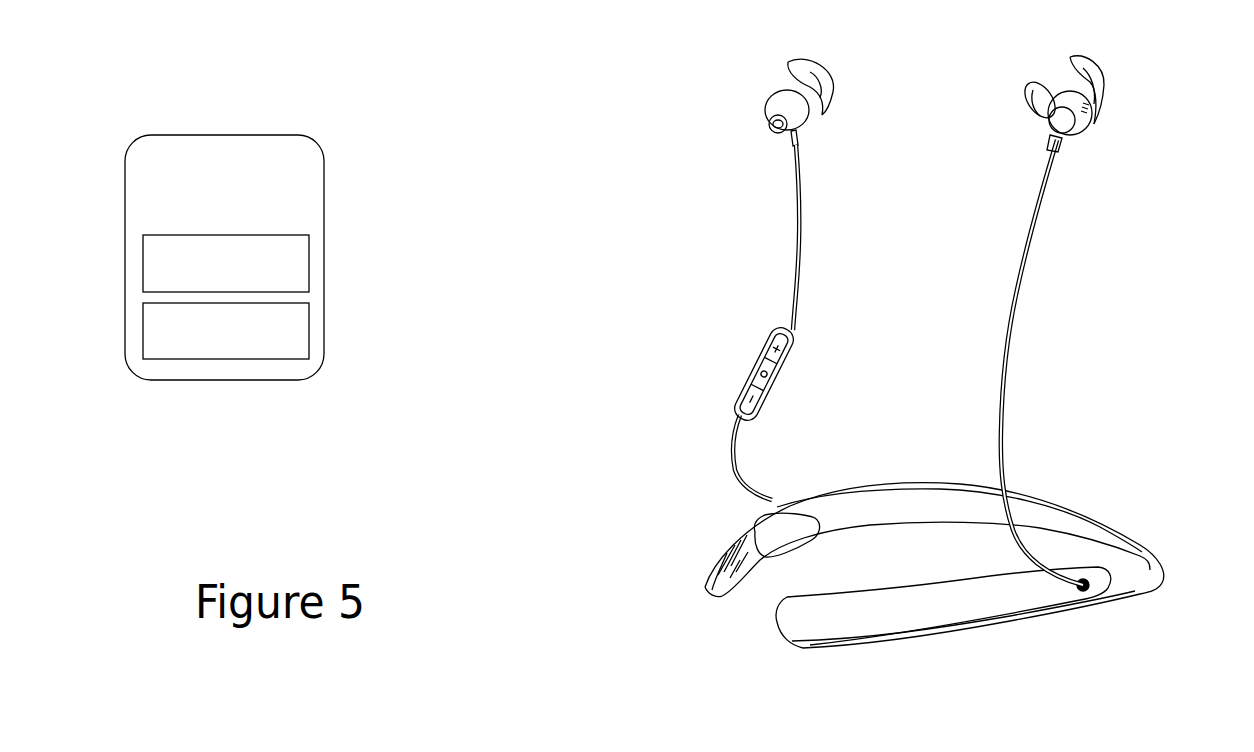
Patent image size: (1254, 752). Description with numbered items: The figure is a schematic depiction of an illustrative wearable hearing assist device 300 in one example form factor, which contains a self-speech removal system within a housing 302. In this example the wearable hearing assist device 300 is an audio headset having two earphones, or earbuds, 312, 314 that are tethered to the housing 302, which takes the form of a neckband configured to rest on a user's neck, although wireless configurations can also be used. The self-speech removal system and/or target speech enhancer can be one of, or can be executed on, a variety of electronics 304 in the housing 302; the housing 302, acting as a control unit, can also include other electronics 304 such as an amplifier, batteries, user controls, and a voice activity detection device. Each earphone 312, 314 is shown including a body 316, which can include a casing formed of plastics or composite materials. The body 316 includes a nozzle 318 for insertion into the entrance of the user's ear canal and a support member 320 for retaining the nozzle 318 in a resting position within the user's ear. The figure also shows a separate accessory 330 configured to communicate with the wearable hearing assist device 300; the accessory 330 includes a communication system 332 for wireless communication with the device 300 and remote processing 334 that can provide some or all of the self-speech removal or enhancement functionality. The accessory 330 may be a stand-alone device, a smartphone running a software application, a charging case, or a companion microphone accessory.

The wearable hearing assist device 300 is at (566, 380).
The housing 302 is at (730, 654).
The electronics 304 is at (770, 528).
The earphone 312 is at (780, 143).
The earphone 314 is at (1045, 137).
The body 316 is at (1093, 125).
The nozzle 318 is at (1030, 108).
The support member 320 is at (1105, 82).
The accessory 330 is at (206, 213).
The communication system 332 is at (273, 285).
The remote processing 334 is at (289, 353).